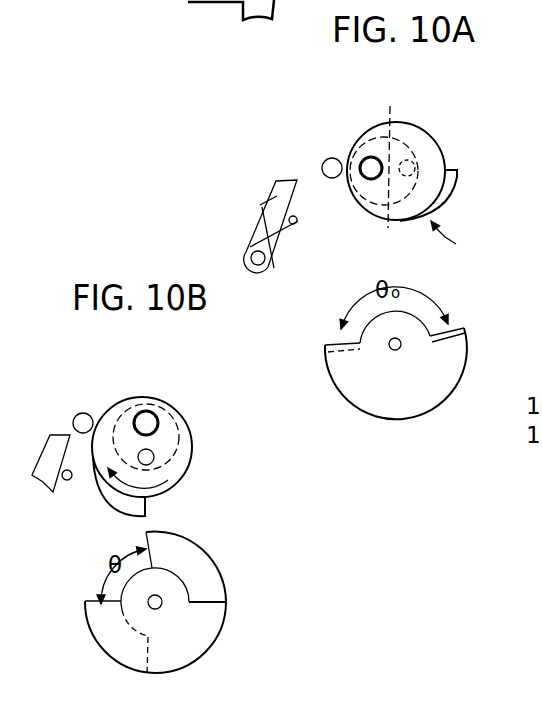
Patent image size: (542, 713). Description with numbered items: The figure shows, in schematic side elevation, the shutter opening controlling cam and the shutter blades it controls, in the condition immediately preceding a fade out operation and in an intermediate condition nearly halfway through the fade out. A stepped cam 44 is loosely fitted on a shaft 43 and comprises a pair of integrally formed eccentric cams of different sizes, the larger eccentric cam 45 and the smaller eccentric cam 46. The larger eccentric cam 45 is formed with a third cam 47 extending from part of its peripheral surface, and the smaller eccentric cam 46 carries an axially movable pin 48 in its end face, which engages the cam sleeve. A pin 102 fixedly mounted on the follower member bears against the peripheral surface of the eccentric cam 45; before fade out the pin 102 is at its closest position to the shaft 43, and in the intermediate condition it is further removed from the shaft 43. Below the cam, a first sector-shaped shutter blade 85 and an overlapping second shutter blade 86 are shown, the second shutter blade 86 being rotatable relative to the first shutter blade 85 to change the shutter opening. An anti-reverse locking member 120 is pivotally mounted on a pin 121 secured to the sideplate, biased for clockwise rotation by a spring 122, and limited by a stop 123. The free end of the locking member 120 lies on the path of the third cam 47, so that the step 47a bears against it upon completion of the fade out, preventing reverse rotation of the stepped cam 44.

In FIG. 10A, the shaft 43 is at (363, 157).
In FIG. 10B, the shaft 43 is at (147, 411).
In FIG. 10A, the stepped cam 44 is at (460, 240).
In FIG. 10B, the stepped cam 44 is at (203, 437).
In FIG. 10A, the larger eccentric cam 45 is at (427, 138).
In FIG. 10B, the larger eccentric cam 45 is at (178, 468).
In FIG. 10A, the smaller eccentric cam 46 is at (384, 155).
In FIG. 10B, the smaller eccentric cam 46 is at (146, 437).
In FIG. 10A, the third cam 47 is at (457, 177).
In FIG. 10B, the third cam 47 is at (132, 508).
In FIG. 10A, the step 47a is at (452, 169).
In FIG. 10A, the pin 48 is at (391, 209).
In FIG. 10B, the pin 48 is at (146, 457).
In FIG. 10A, the first sector-shaped shutter blade 85 is at (460, 323).
In FIG. 10B, the first sector-shaped shutter blade 85 is at (200, 557).
In FIG. 10A, the second shutter blade 86 is at (457, 360).
In FIG. 10B, the second shutter blade 86 is at (112, 650).
In FIG. 10A, the pin 102 is at (330, 158).
In FIG. 10B, the pin 102 is at (83, 413).
In FIG. 10A, the anti-reverse locking member 120 is at (290, 210).
In FIG. 10B, the anti-reverse locking member 120 is at (51, 463).
In FIG. 10A, the pin 121 is at (270, 267).
In FIG. 10A, the spring 122 is at (262, 217).
In FIG. 10A, the stop 123 is at (296, 225).
In FIG. 10B, the stop 123 is at (67, 475).